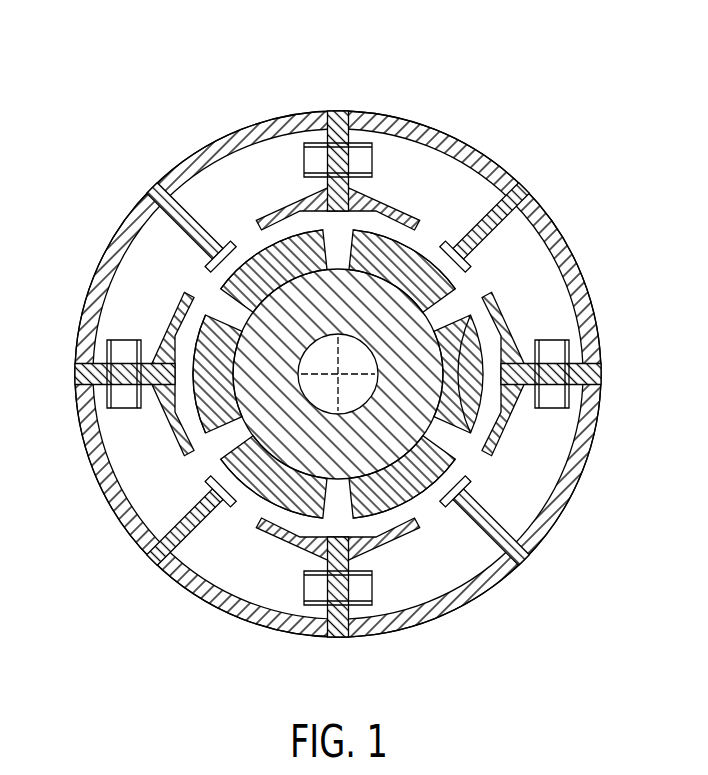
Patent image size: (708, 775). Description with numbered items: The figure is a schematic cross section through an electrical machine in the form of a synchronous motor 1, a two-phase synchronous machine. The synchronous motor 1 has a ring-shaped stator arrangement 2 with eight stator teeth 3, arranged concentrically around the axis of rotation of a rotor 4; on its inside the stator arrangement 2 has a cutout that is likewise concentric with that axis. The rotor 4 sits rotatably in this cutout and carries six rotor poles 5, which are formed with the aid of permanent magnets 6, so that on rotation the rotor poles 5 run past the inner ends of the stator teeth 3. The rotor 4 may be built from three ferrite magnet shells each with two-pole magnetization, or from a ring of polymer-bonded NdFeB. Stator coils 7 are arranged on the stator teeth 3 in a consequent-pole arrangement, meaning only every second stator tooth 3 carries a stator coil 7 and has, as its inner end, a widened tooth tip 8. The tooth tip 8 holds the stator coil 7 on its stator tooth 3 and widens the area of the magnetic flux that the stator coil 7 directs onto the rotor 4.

The synchronous motor 1 is at (472, 75).
The stator arrangement 2 is at (565, 250).
The stator tooth 3 is at (339, 133).
The rotor 4 is at (410, 416).
The rotor pole 5 is at (280, 276).
The permanent magnet 6 is at (270, 247).
The stator coil 7 is at (376, 150).
The tooth tip 8 is at (310, 206).